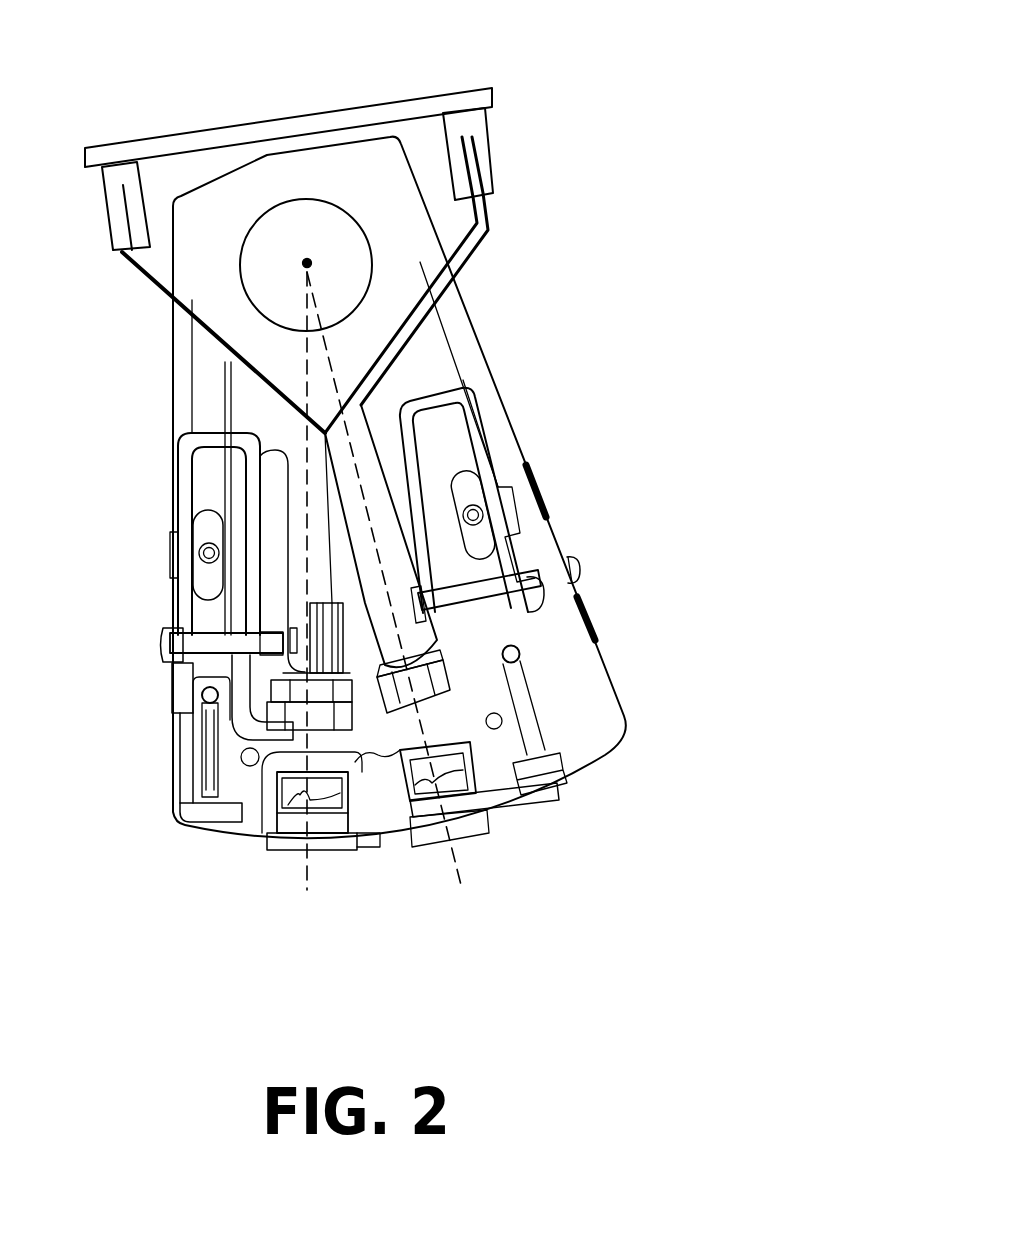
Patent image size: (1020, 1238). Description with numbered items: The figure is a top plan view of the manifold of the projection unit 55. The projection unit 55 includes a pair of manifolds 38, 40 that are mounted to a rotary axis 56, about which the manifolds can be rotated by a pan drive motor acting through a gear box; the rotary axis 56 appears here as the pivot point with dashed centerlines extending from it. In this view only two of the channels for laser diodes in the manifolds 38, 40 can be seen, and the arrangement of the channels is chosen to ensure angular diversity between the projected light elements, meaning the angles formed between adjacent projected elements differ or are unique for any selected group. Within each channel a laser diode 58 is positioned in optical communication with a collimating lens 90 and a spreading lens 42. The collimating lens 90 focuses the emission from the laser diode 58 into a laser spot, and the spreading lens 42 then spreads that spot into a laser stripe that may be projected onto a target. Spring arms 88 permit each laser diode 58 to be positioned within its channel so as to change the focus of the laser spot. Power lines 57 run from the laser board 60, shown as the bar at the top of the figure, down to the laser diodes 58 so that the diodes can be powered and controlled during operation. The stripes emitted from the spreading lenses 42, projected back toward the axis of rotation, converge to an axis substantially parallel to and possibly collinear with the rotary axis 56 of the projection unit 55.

The projection unit 55 is at (632, 226).
The laser board 60 is at (353, 117).
The rotary axis 56 is at (325, 227).
The power lines 57 is at (380, 397).
The spring arms 88 is at (480, 453).
The laser diodes 58 is at (303, 707).
The collimating lenses 90 is at (297, 800).
The spreading lenses 42 is at (343, 845).
The manifold 38 is at (447, 487).
The manifold 40 is at (590, 687).